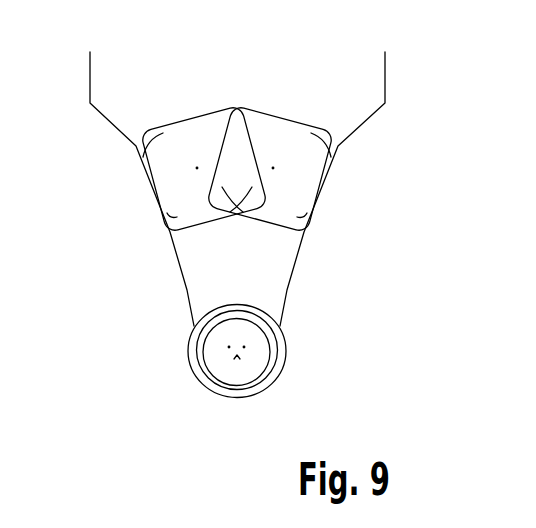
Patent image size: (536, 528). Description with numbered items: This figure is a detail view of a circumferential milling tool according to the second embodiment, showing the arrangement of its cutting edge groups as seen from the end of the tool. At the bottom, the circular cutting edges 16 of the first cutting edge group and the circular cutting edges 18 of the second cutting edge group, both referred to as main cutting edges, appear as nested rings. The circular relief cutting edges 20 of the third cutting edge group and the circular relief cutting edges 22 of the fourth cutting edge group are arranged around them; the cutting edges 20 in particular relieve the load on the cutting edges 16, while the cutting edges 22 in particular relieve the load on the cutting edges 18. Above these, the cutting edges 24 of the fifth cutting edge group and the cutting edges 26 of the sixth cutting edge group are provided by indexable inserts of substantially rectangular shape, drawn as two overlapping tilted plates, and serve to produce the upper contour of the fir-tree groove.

The cutting edges of the fifth cutting edge group 24 is at (159, 126).
The cutting edges of the sixth cutting edge group 26 is at (320, 126).
The cutting edges of the fourth cutting edge group 22 is at (214, 311).
The cutting edges of the third cutting edge group 20 is at (260, 311).
The cutting edges of the second cutting edge group 18 is at (215, 393).
The cutting edges of the first cutting edge group 16 is at (255, 394).